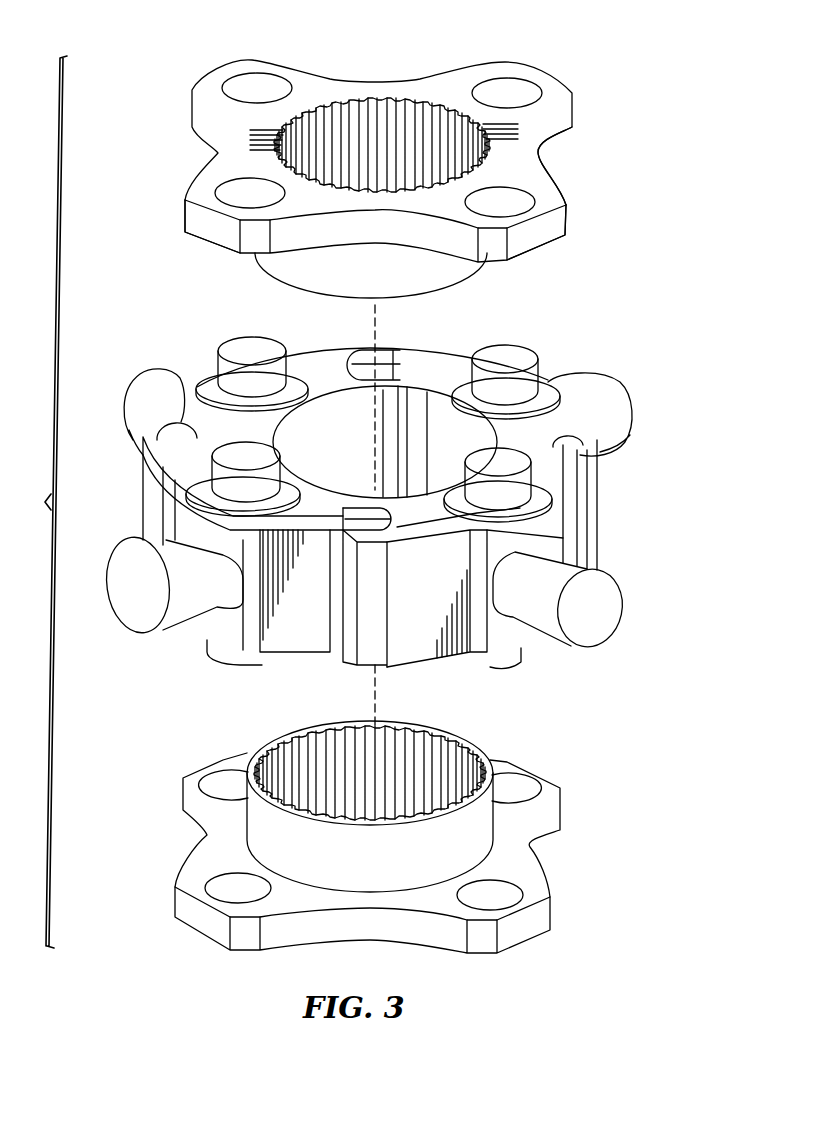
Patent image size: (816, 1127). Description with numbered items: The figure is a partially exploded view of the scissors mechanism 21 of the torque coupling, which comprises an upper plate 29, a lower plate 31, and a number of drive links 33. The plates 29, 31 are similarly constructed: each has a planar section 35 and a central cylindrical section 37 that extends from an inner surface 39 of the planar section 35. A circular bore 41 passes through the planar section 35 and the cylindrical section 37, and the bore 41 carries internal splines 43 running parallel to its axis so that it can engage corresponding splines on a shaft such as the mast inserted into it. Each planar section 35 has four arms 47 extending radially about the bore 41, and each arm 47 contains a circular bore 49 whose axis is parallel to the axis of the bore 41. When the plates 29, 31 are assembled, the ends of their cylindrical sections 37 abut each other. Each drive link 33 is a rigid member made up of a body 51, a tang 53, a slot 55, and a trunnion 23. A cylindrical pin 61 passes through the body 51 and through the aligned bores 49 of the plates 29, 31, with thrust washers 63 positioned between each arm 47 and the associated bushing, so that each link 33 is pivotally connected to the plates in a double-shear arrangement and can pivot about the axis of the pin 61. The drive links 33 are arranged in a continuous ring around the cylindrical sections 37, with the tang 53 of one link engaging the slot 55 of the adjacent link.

The scissors mechanism 21 is at (44, 502).
The upper plate 29 is at (238, 62).
The circular bore 41 is at (443, 110).
The internal splines 43 is at (372, 118).
The circular bore 49 is at (497, 202).
The planar section 35 is at (550, 140).
The arm 47 is at (208, 232).
The central cylindrical section 37 is at (298, 270).
The inner surface 39 is at (527, 255).
The drive link 33 is at (412, 662).
The body 51 is at (305, 625).
The tang 53 is at (358, 513).
The slot 55 is at (190, 432).
The thrust washer 63 is at (545, 384).
The cylindrical pin 61 is at (500, 352).
The trunnion 23 is at (128, 600).
The lower plate 31 is at (172, 906).